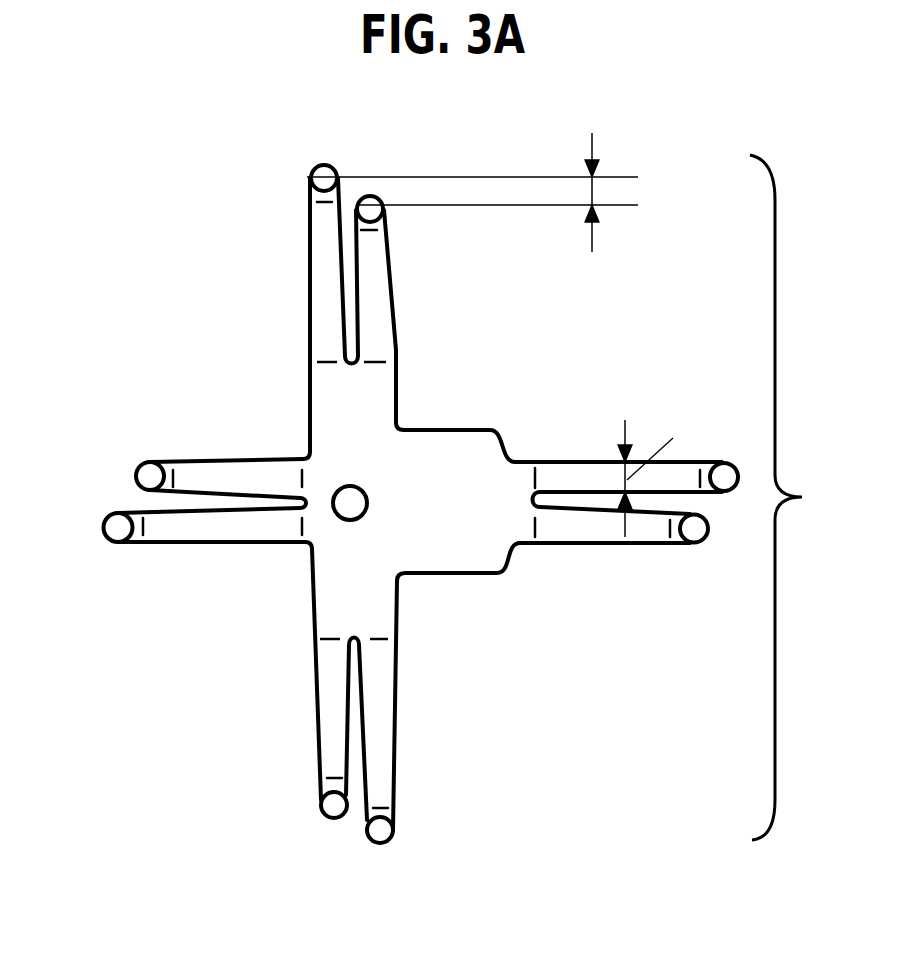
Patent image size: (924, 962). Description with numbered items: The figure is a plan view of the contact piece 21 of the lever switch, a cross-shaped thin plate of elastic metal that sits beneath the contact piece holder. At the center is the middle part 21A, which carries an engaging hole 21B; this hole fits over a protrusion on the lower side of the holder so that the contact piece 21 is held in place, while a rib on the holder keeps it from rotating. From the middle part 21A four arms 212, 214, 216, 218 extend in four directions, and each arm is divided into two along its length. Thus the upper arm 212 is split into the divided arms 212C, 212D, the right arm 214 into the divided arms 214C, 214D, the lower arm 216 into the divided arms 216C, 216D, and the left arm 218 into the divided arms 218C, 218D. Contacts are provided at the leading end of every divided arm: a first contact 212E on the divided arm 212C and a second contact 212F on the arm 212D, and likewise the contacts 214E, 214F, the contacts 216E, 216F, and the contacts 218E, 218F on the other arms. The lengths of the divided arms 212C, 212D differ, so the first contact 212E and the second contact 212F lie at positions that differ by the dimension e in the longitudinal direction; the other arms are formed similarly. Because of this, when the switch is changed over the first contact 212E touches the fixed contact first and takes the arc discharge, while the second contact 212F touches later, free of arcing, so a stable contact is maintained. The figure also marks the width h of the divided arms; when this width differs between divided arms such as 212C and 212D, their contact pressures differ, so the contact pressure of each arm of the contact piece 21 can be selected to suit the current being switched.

The contact piece 21 is at (437, 495).
The middle part 21A is at (420, 483).
The engaging hole 21B is at (350, 503).
The arm 212 is at (327, 278).
The divided arm 212C is at (322, 305).
The divided arm 212D is at (380, 308).
The first contact 212E is at (312, 173).
The second contact 212F is at (380, 197).
The arm 214 is at (634, 485).
The divided arm 214C is at (593, 473).
The divided arm 214D is at (615, 525).
The contact 214E is at (727, 466).
The contact 214F is at (695, 541).
The arm 216 is at (353, 718).
The divided arm 216C is at (383, 752).
The divided arm 216D is at (335, 723).
The contact 216E is at (380, 838).
The contact 216F is at (330, 810).
The arm 218 is at (166, 519).
The divided arm 218C is at (197, 528).
The divided arm 218D is at (220, 472).
The contact 218E is at (120, 527).
The contact 218F is at (148, 475).